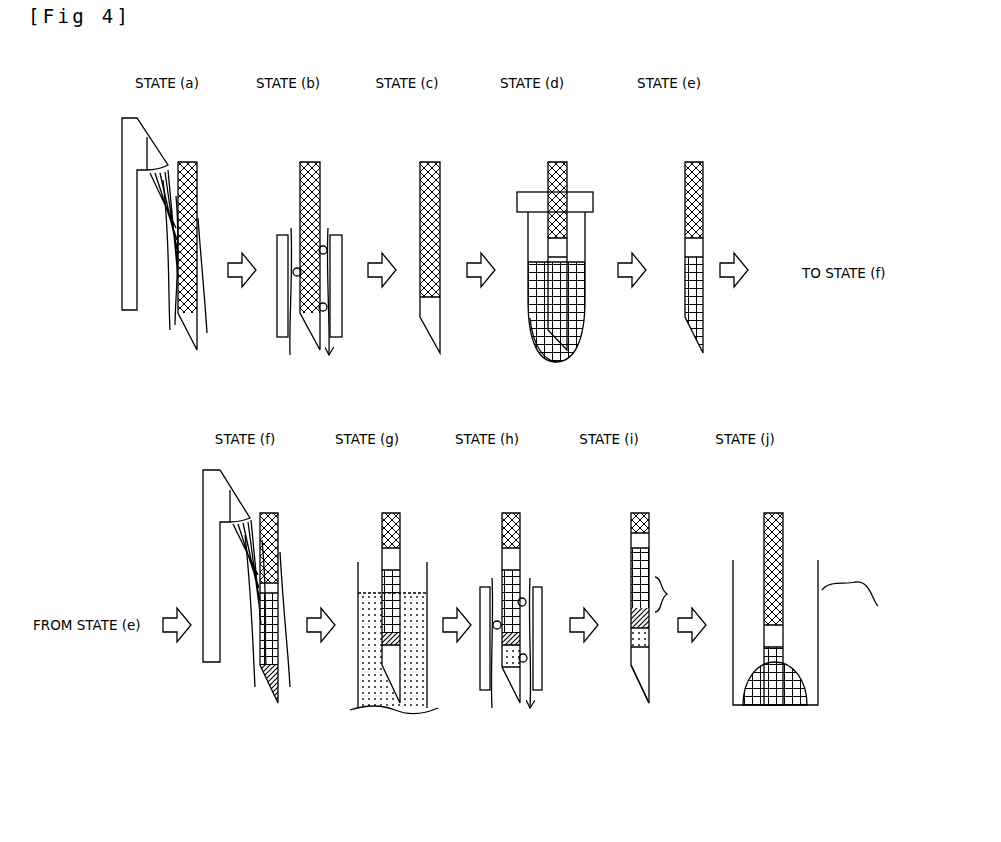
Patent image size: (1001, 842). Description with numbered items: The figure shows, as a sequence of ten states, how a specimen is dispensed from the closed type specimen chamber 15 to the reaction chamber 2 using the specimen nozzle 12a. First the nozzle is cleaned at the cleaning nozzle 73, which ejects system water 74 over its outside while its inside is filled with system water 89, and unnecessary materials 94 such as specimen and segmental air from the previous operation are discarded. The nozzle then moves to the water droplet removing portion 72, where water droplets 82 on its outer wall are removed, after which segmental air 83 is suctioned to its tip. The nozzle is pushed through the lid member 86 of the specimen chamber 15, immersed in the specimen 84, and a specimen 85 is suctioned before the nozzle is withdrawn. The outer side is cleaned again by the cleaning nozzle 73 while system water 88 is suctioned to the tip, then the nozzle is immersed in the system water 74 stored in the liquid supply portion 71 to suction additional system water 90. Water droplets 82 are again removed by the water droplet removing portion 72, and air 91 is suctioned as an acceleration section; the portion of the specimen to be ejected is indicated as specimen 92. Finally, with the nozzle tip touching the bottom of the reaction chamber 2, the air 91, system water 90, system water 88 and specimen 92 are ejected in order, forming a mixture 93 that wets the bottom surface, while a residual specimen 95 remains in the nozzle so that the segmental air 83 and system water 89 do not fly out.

The reaction chamber 2 is at (733, 687).
The specimen nozzle 12a is at (199, 193).
The closed type specimen chamber 15 is at (586, 323).
The liquid supply portion 71 is at (356, 690).
The water droplet removing portion 72 is at (277, 242).
The cleaning nozzle 73 is at (127, 142).
The system water 74 is at (416, 678).
The water droplets 82 is at (328, 307).
The segmental air 83 is at (552, 431).
The specimen 84 is at (538, 341).
The specimen 85 is at (510, 465).
The lid member 86 is at (526, 193).
The system water 88 is at (437, 658).
The system water 89 is at (482, 407).
The additional system water 90 is at (539, 691).
The air 91 is at (640, 675).
The specimen 92 is at (667, 594).
The mixture 93 is at (760, 706).
The unnecessary materials 94 is at (850, 584).
The residual specimen 95 is at (784, 657).